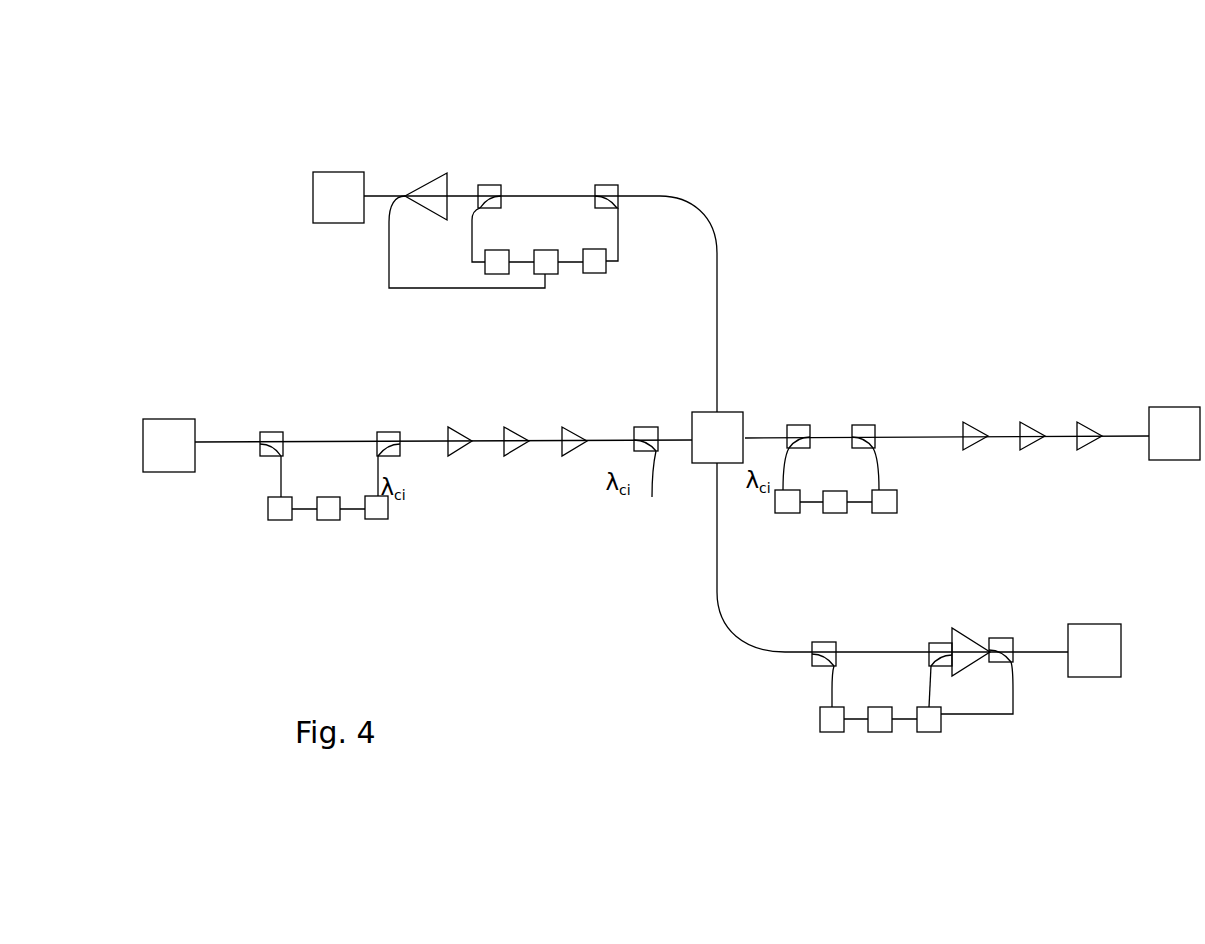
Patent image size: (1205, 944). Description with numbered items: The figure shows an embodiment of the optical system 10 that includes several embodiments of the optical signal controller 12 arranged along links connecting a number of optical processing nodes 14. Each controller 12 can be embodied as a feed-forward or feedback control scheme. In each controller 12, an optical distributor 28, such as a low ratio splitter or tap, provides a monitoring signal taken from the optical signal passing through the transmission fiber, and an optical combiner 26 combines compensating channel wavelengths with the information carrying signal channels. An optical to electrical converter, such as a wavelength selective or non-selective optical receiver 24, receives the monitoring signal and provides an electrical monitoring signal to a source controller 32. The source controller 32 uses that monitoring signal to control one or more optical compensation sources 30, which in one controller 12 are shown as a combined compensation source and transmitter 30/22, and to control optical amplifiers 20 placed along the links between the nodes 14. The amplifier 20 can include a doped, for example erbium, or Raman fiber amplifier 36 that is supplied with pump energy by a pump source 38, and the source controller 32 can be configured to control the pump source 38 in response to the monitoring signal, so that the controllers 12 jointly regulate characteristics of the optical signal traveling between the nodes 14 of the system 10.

The optical system 10 is at (582, 752).
The optical controller 12 is at (509, 121).
The optical processing node 14 is at (336, 172).
The optical amplifier 20 is at (565, 432).
The transmitter 22 is at (788, 513).
The optical receiver 24 is at (485, 264).
The optical combiner 26 is at (610, 185).
The optical distributor 28 is at (492, 185).
The optical compensation source 30 is at (599, 274).
The source controller 32 is at (552, 274).
The fiber amplifier 36 is at (437, 195).
The pump source 38 is at (933, 732).